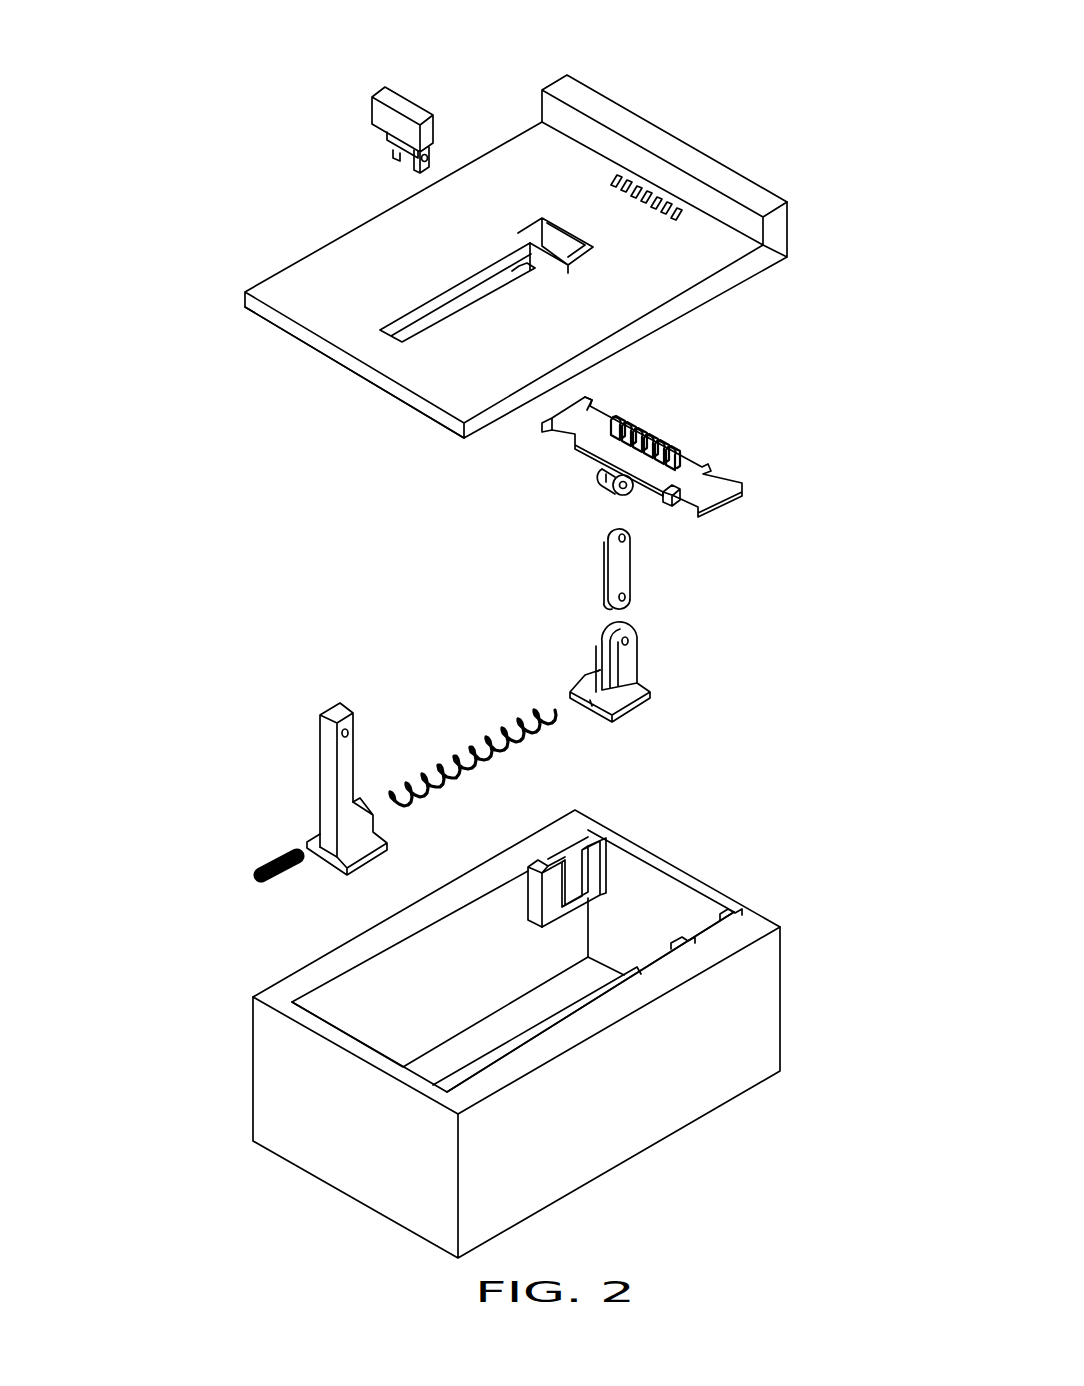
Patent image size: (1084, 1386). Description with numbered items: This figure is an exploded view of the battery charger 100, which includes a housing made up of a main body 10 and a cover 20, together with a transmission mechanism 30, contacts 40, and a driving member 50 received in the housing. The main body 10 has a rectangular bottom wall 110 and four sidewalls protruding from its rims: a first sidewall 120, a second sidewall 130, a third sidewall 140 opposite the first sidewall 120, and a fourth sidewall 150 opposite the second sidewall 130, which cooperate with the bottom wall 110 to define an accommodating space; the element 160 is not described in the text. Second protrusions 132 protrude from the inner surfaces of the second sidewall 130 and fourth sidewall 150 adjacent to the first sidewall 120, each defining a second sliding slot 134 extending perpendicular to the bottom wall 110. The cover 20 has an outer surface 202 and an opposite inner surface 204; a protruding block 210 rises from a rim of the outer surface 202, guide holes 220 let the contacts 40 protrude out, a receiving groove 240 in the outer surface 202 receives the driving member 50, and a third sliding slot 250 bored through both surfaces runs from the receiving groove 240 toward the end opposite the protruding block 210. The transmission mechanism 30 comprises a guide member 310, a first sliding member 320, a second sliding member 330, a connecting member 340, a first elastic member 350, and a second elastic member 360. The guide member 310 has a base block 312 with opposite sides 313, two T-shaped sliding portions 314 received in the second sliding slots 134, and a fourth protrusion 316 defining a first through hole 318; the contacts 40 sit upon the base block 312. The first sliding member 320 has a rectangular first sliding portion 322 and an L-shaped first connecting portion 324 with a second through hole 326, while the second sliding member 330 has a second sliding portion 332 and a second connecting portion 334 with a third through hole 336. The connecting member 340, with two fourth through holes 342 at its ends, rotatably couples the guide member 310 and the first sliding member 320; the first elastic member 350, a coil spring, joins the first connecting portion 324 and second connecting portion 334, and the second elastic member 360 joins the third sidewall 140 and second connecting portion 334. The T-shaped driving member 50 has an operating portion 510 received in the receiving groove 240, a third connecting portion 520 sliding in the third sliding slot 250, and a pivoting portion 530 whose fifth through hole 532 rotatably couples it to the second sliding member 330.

The battery charger 100 is at (212, 64).
The main body 10 is at (722, 866).
The bottom wall 110 is at (639, 1161).
The first sidewall 120 is at (657, 860).
The second sidewall 130 is at (375, 940).
The second protrusion 132 is at (552, 882).
The second sliding slot 134 is at (571, 855).
The third sidewall 140 is at (321, 1029).
The fourth sidewall 150 is at (628, 1006).
The bottom floor 160 is at (397, 1007).
The cover 20 is at (805, 223).
The outer surface 202 is at (305, 288).
The inner surface 204 is at (296, 348).
The protruding block 210 is at (744, 193).
The guide holes 220 is at (668, 195).
The receiving groove 240 is at (528, 232).
The third sliding slot 250 is at (456, 296).
The transmission mechanism 30 is at (388, 451).
The guide member 310 is at (525, 453).
The base block 312 is at (688, 460).
The sides 313 is at (647, 490).
The T-shaped sliding portions 314 is at (592, 410).
The fourth protrusion 316 is at (610, 471).
The first through hole 318 is at (620, 496).
The first sliding member 320 is at (517, 628).
The first sliding portion 322 is at (628, 707).
The first connecting portion 324 is at (620, 684).
The second through hole 326 is at (631, 640).
The second sliding member 330 is at (312, 700).
The second sliding portion 332 is at (374, 857).
The second connecting portion 334 is at (340, 785).
The third through hole 336 is at (345, 731).
The connecting member 340 is at (618, 562).
The fourth through holes 342 is at (630, 590).
The first elastic member 350 is at (490, 733).
The second elastic member 360 is at (272, 857).
The contacts 40 is at (678, 438).
The driving member 50 is at (385, 95).
The operating portion 510 is at (380, 113).
The third connecting portion 520 is at (392, 133).
The pivoting portion 530 is at (433, 158).
The fifth through hole 532 is at (428, 157).